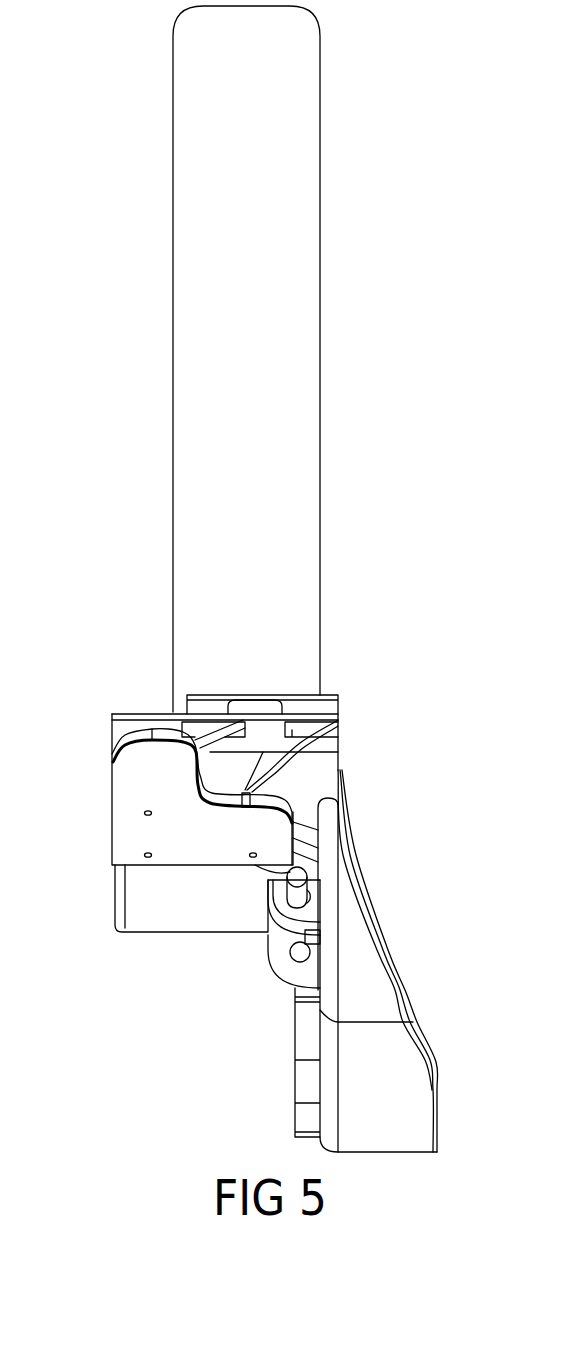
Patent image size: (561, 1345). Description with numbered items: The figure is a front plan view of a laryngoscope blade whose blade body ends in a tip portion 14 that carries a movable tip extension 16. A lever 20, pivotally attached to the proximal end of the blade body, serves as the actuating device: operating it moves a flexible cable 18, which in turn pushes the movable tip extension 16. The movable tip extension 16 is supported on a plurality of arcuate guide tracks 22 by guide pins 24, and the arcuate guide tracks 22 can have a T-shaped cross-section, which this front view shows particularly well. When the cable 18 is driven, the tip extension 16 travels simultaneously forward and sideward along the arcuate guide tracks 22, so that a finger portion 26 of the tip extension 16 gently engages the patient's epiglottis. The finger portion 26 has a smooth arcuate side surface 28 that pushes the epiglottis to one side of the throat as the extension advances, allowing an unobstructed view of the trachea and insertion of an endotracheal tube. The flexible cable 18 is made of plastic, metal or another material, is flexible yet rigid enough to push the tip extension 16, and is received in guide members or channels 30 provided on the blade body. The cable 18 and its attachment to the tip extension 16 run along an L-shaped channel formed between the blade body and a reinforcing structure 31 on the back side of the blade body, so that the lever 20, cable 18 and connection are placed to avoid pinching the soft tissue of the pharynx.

The tip portion 14 is at (333, 717).
The movable tip extension 16 is at (268, 821).
The flexible cable 18 is at (302, 893).
The lever 20 is at (303, 290).
The arcuate guide tracks 22 is at (213, 732).
The guide pins 24 is at (146, 854).
The finger portion 26 is at (132, 762).
The smooth arcuate side surface 28 is at (198, 792).
The guide members or channels 30 is at (313, 937).
The reinforcing structure 31 is at (397, 1112).